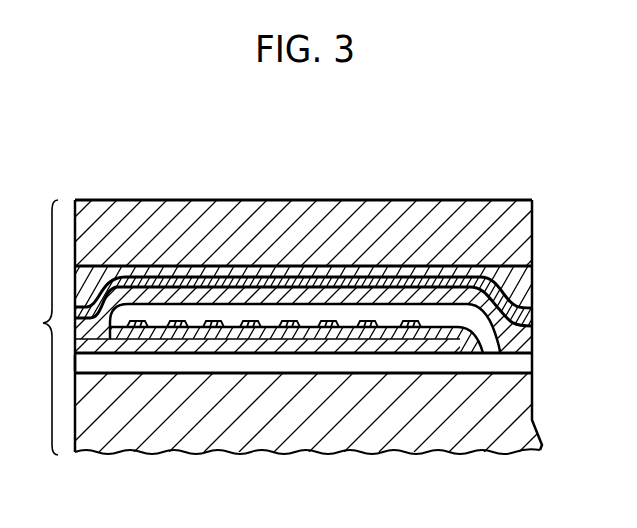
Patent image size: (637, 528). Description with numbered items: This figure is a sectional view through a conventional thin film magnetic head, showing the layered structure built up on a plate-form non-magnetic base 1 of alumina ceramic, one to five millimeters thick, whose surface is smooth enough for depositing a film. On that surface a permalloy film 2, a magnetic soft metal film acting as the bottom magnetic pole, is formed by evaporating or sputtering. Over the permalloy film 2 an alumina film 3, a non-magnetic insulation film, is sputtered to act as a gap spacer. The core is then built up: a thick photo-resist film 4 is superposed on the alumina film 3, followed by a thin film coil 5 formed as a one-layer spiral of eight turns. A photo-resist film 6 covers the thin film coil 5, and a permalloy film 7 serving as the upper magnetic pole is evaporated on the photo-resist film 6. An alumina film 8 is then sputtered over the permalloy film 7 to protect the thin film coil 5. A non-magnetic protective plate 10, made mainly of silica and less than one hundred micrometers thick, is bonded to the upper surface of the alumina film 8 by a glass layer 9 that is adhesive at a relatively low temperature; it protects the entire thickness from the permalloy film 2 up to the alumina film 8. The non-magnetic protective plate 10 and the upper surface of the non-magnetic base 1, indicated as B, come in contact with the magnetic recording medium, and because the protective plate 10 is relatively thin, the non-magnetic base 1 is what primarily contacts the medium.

The non-magnetic base 1 is at (458, 443).
The permalloy film 2 is at (158, 363).
The alumina film 3 is at (98, 347).
The thick photo-resist film 4 is at (503, 337).
The thin film coil 5 is at (420, 317).
The photo-resist film 6 is at (467, 320).
The permalloy film 7 is at (93, 300).
The alumina film 8 is at (536, 315).
The glass layer 9 is at (536, 283).
The non-magnetic protective plate 10 is at (501, 200).
The upper surface of the non-magnetic base B is at (40, 327).